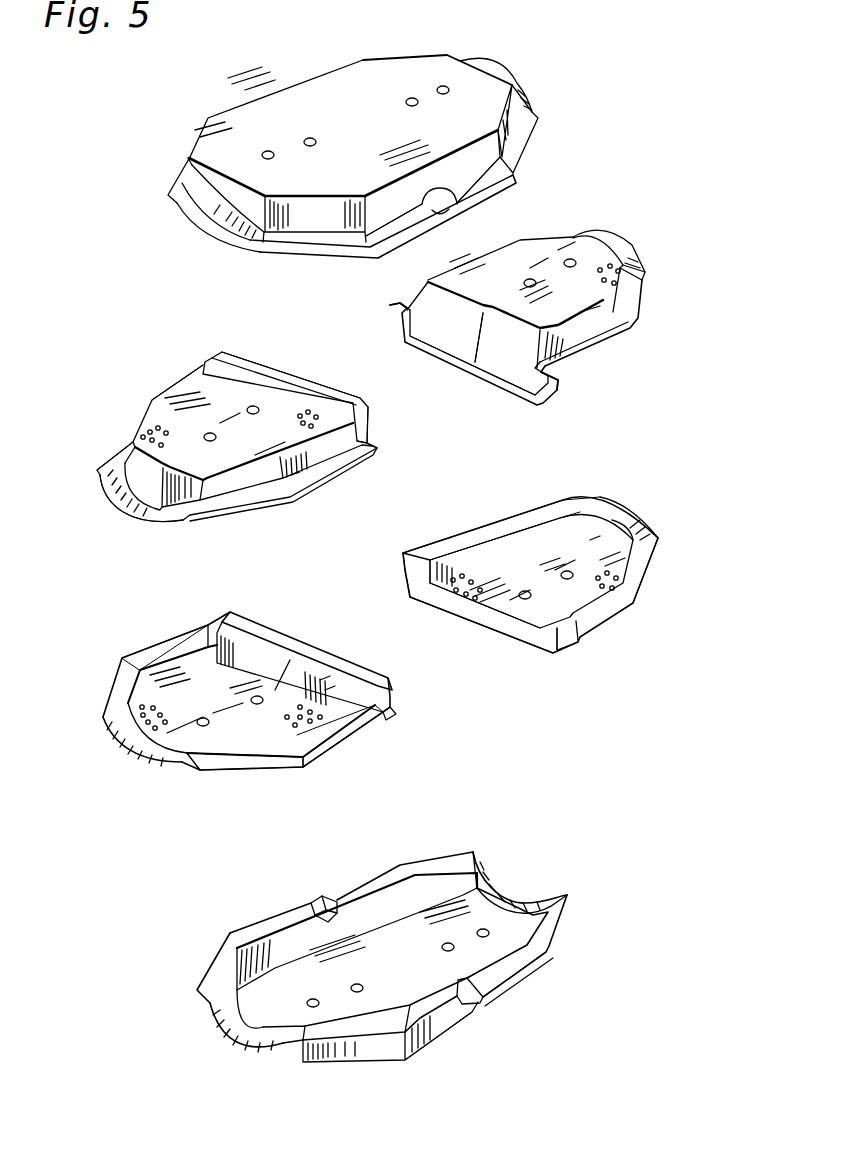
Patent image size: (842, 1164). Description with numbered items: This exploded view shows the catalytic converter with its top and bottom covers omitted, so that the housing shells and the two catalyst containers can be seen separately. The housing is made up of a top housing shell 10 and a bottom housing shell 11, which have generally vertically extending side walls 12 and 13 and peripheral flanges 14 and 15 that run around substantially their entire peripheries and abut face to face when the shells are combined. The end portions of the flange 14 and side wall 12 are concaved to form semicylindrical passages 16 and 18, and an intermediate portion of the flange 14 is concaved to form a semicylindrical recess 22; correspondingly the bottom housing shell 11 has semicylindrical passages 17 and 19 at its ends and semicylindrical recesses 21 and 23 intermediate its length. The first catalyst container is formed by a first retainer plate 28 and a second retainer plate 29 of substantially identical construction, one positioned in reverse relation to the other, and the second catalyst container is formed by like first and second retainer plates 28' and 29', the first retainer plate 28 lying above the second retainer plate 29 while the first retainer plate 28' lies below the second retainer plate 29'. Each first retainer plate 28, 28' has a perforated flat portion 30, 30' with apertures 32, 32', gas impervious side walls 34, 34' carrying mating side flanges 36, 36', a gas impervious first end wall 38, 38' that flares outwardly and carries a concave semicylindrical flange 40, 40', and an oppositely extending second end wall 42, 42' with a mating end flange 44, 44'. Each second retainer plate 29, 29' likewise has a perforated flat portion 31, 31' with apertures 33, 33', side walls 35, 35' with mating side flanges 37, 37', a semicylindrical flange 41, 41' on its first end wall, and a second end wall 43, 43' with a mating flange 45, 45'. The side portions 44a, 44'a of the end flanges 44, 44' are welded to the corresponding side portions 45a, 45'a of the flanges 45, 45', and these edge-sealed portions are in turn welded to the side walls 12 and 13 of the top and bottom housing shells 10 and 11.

The top housing shell 10 is at (262, 97).
The bottom housing shell 11 is at (425, 1047).
The side walls of top housing shell 12 is at (478, 153).
The side walls of bottom housing shell 13 is at (513, 982).
The peripheral flange of top housing shell 14 is at (390, 226).
The peripheral flange of bottom housing shell 15 is at (445, 1017).
The semicylindrical passage 16 is at (212, 205).
The semicylindrical passage 17 is at (243, 1030).
The semicylindrical passage 18 is at (488, 70).
The semicylindrical passage 19 is at (515, 892).
The semicylindrical recess 21 is at (310, 903).
The semicylindrical recess 22 is at (448, 208).
The semicylindrical recess 23 is at (482, 1003).
The first retainer plate 28 is at (229, 409).
The first retainer plate 28' is at (555, 582).
The second retainer plate 29 is at (246, 719).
The second retainer plate 29' is at (513, 269).
The perforated flat portion 30 is at (181, 348).
The perforated flat portion 30' is at (555, 508).
The perforated flat portion 31 is at (223, 783).
The perforated flat portion 31' is at (619, 338).
The apertures 32 is at (200, 392).
The apertures 32' is at (515, 615).
The apertures 33 is at (181, 705).
The apertures 33' is at (666, 268).
The side walls of first retainer plate 34 is at (280, 493).
The side walls of first retainer plate 34' is at (473, 535).
The side walls of second retainer plate 35 is at (267, 692).
The side walls of second retainer plate 35' is at (646, 318).
The mating side flanges 36 is at (172, 472).
The mating side flanges 36' is at (569, 543).
The mating side flanges 37 is at (188, 723).
The mating side flanges 37' is at (484, 343).
The first end wall 38 is at (111, 492).
The first end wall 38' is at (581, 492).
The semicylindrical flange 40 is at (130, 511).
The semicylindrical flange 40' is at (666, 517).
The semicylindrical flange 41 is at (128, 750).
The semicylindrical flange 41' is at (635, 224).
The second end wall 42 is at (291, 347).
The second end wall 42' is at (485, 638).
The second end wall 43 is at (336, 673).
The second end wall 43' is at (458, 370).
The mating end flange 44 is at (285, 378).
The mating end flange 44' is at (481, 652).
The side portions of mating end flange 44a is at (363, 423).
The side portions of mating end flange 44'a is at (495, 628).
The mating flange 45 is at (304, 644).
The mating flange 45' is at (461, 367).
The side portions of mating flange 45a is at (380, 720).
The side portions of mating flange 45'a is at (447, 365).